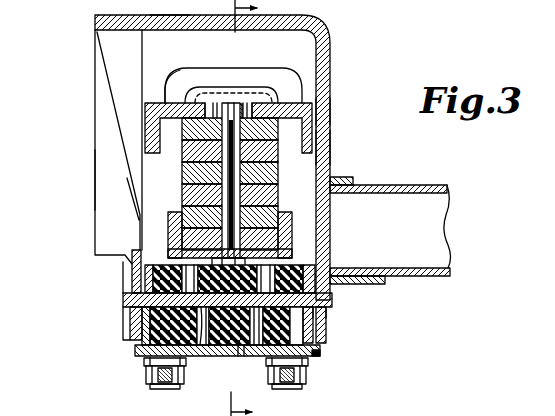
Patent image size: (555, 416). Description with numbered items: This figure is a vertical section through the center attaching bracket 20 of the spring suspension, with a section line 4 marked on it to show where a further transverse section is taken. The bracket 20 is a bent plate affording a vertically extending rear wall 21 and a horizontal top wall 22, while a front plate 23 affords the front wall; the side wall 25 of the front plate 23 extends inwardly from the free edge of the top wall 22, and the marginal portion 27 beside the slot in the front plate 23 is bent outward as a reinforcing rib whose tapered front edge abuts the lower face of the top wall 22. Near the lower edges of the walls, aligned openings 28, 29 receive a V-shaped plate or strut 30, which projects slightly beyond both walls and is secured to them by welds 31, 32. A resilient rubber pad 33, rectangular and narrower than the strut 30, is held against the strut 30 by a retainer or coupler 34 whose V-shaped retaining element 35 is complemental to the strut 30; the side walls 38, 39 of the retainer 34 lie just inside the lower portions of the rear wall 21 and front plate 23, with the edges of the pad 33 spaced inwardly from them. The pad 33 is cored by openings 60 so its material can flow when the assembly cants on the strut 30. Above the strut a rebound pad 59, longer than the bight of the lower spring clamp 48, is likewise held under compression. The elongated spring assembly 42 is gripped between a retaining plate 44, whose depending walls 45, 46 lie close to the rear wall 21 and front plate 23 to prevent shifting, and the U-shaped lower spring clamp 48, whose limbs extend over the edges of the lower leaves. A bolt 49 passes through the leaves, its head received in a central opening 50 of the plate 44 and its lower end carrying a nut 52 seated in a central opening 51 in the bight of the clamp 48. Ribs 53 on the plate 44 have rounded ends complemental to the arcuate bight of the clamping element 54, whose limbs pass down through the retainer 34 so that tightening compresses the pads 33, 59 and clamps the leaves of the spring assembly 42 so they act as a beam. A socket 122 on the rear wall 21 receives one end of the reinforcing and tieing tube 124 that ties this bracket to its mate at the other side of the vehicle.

The section line 4- 4 is at (234, 208).
The center support or attaching bracket 20 is at (336, 52).
The rear wall 21 is at (338, 141).
The top wall 22 is at (163, 15).
The front plate 23 is at (95, 40).
The side wall 25 is at (93, 171).
The marginal portion 27 is at (118, 80).
The opening 28 is at (324, 313).
The opening 29 is at (130, 318).
The plate or strut 30 is at (335, 302).
The weld 31 is at (327, 310).
The weld 32 is at (128, 308).
The resilient pad 33 is at (210, 364).
The retainer or coupler 34 is at (320, 355).
The retaining element 35 is at (260, 383).
The side wall 38 is at (316, 348).
The side wall 39 is at (143, 341).
The spring assembly 42 is at (181, 180).
The retaining plate 44 is at (270, 99).
The depending wall 45 is at (326, 112).
The depending wall 46 is at (147, 136).
The lower spring clamp 48 is at (294, 228).
The bolt 49 is at (242, 169).
The opening 50 is at (216, 103).
The opening 51 is at (290, 256).
The nut 52 is at (140, 243).
The rib 53 is at (255, 100).
The clamping element 54 is at (187, 73).
The rebound pad 59 is at (152, 281).
The opening 60 is at (244, 358).
The socket 122 is at (358, 180).
The reinforcing and tieing tube 124 is at (452, 268).